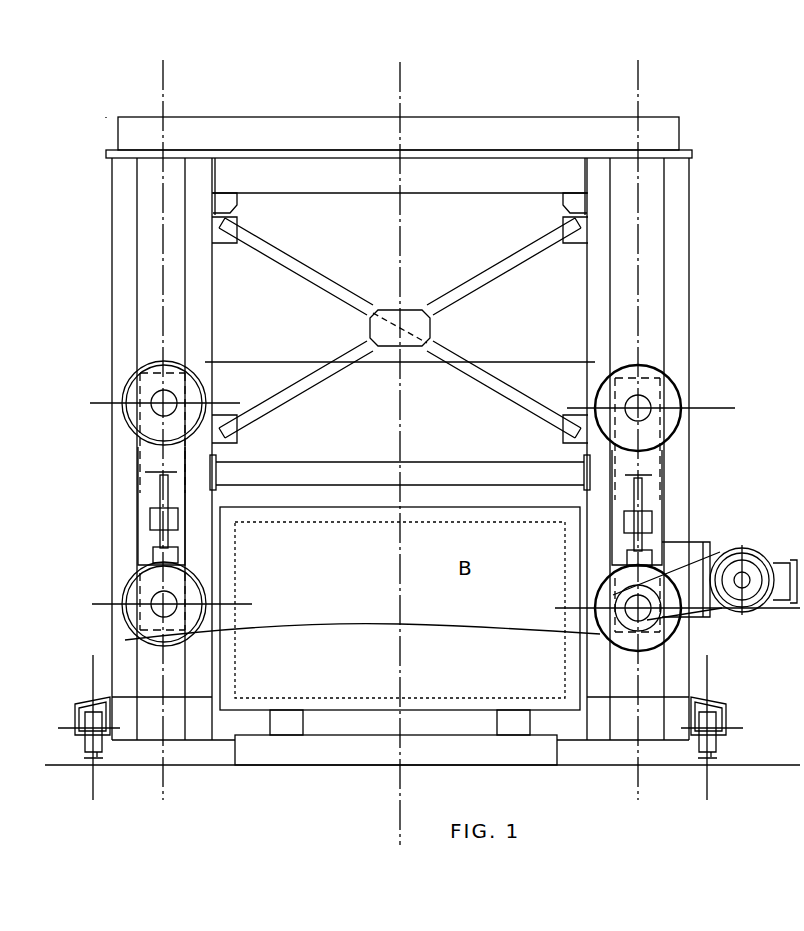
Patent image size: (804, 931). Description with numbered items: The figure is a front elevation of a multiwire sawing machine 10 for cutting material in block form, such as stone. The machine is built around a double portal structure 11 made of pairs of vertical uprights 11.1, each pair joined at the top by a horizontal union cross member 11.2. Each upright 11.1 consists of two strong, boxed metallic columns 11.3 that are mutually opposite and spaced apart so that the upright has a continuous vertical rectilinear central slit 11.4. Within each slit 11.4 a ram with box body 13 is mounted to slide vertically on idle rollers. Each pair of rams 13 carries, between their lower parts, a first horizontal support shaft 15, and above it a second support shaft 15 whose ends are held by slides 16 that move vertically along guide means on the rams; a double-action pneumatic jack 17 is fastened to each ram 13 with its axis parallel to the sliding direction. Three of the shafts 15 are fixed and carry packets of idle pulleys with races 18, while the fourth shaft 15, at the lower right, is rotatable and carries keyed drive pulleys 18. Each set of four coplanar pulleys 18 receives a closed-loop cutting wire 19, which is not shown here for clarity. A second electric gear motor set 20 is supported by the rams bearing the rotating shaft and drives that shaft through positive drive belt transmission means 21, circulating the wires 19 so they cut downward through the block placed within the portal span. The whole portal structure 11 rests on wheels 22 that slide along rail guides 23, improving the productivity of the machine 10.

The multiwire sawing machine 10 is at (681, 80).
The double portal structure 11 is at (78, 168).
The vertical upright 11.1 is at (96, 246).
The horizontal union cross member 11.2 is at (442, 136).
The metallic column 11.3 is at (210, 285).
The vertical rectilinear central slit 11.4 is at (152, 296).
The ram with box body 13 is at (143, 530).
The support shaft 15 is at (112, 420).
The slide 16 is at (137, 452).
The double-action pneumatic jack 17 is at (140, 495).
The pulley with races 18 is at (200, 382).
The cutting wire 19 is at (290, 356).
The second electric gear motor set 20 is at (760, 550).
The positive drive belt transmission means 21 is at (690, 623).
The wheel 22 is at (85, 735).
The rail guide 23 is at (100, 758).